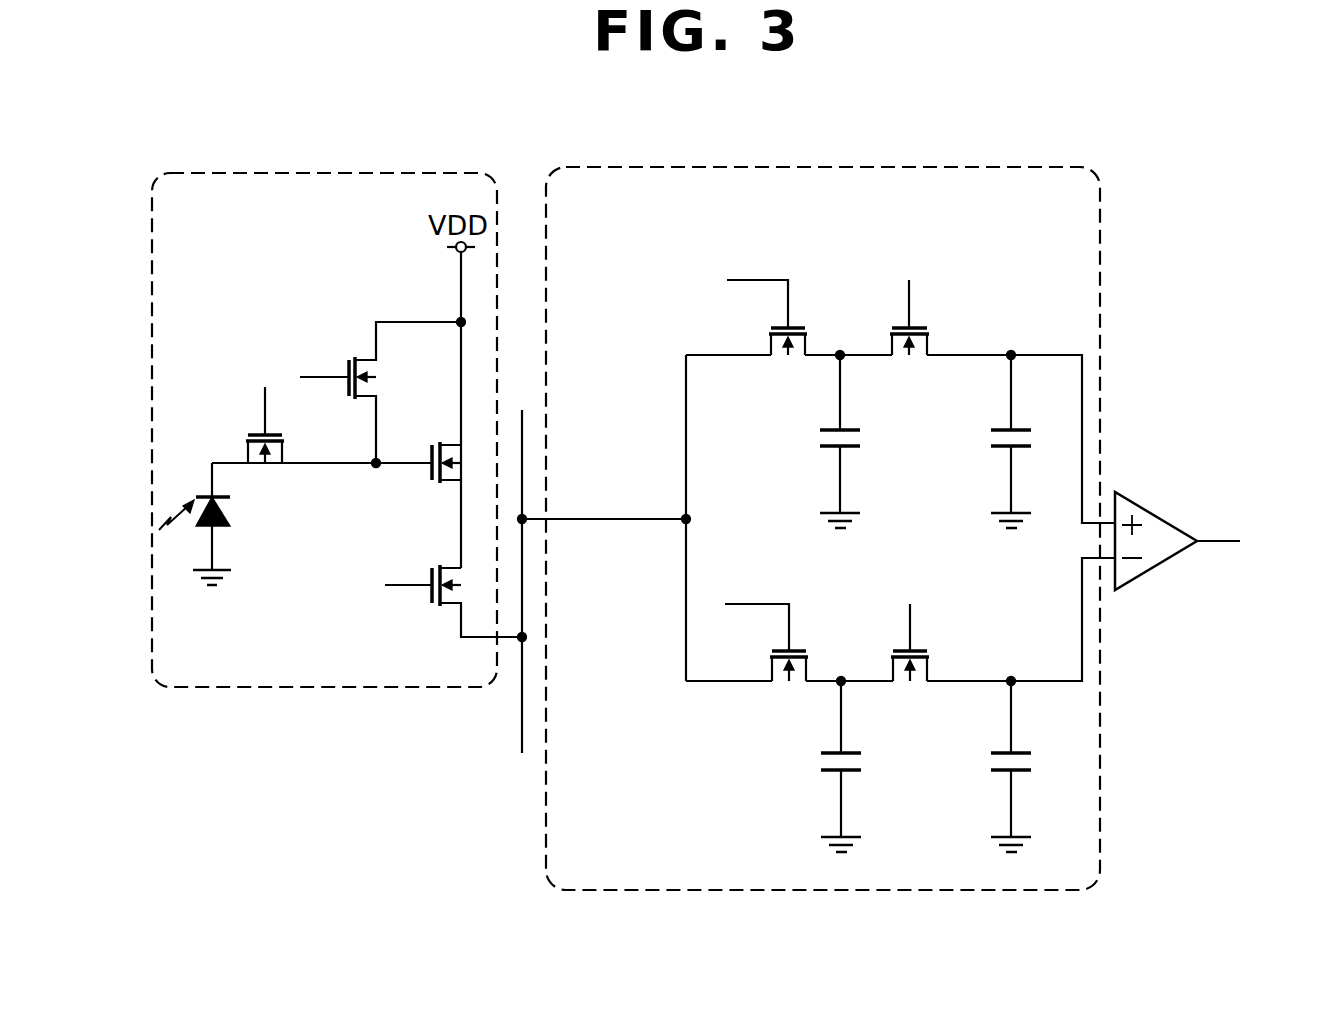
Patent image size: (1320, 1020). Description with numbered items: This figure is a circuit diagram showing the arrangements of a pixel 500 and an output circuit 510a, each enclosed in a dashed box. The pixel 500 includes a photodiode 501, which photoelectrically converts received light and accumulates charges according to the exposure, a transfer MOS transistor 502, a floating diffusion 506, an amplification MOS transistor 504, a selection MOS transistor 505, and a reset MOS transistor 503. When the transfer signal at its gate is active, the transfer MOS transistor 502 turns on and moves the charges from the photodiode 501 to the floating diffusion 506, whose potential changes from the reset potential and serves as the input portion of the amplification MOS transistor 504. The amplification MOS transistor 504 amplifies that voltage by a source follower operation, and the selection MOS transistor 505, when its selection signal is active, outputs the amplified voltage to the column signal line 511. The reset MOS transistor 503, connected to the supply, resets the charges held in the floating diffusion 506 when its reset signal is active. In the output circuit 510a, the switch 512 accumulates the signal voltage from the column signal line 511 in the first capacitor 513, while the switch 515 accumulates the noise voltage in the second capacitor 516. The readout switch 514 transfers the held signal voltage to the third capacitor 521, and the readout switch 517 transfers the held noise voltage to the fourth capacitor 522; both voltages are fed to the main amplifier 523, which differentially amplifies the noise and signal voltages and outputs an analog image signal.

The pixel 500 is at (440, 172).
The photodiode 501 is at (202, 492).
The transfer MOS transistor 502 is at (274, 465).
The reset MOS transistor 503 is at (360, 350).
The amplification MOS transistor 504 is at (437, 440).
The selection MOS transistor 505 is at (437, 608).
The floating diffusion 506 is at (374, 480).
The output circuit 510a is at (1010, 163).
The column signal line 511 is at (645, 524).
The switch 512 is at (800, 322).
The capacitor CTS 513 is at (826, 452).
The readout switch 514 is at (930, 323).
The switch 515 is at (815, 662).
The capacitor CTN 516 is at (834, 776).
The readout switch 517 is at (937, 662).
The capacitor CHS 521 is at (996, 452).
The capacitor CHN 522 is at (1004, 776).
The main AMP 523 is at (1152, 572).